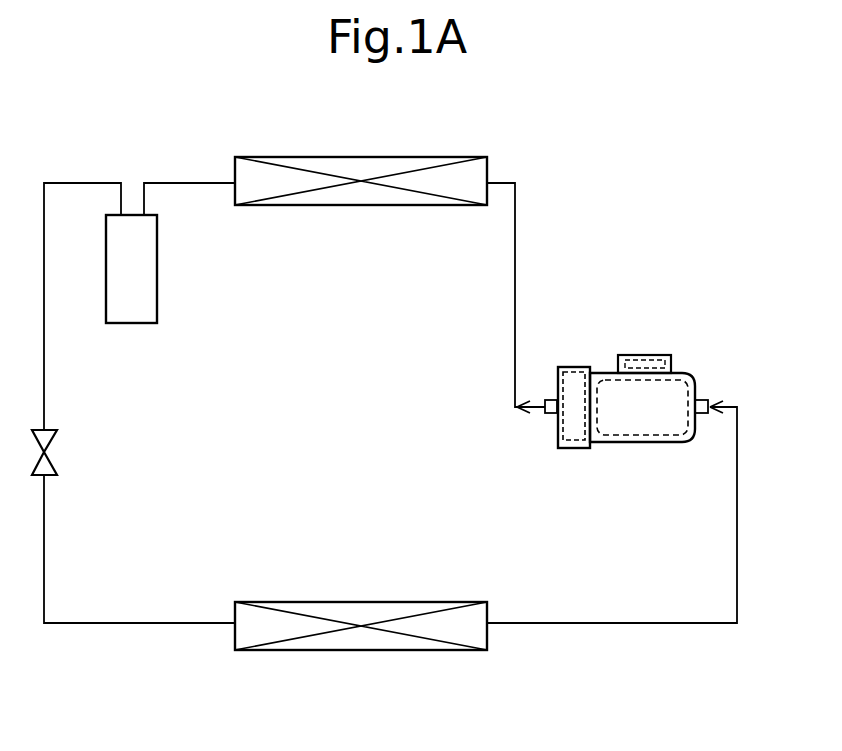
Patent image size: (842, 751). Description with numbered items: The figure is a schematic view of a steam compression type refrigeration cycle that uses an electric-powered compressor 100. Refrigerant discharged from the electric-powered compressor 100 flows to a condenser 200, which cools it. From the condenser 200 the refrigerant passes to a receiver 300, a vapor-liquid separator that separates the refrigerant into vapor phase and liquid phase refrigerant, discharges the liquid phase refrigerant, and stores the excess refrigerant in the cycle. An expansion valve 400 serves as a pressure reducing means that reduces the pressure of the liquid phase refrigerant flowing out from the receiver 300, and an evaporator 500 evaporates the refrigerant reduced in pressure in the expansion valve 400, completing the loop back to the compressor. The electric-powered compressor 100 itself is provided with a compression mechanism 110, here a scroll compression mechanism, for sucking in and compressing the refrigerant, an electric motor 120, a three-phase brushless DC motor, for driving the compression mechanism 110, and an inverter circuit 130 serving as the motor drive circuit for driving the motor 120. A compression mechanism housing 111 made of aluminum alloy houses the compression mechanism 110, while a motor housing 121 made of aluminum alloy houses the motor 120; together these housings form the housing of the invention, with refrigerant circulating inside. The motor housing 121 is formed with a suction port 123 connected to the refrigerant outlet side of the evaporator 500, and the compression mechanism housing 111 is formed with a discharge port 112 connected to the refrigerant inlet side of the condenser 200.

The electric-powered compressor 100 is at (618, 394).
The compression mechanism 110 is at (521, 439).
The compression mechanism housing 111 is at (558, 435).
The discharge port 112 is at (548, 415).
The electric motor 120 is at (669, 414).
The motor housing 121 is at (685, 372).
The suction port 123 is at (700, 400).
The inverter circuit 130 is at (603, 363).
The condenser 200 is at (382, 167).
The receiver 300 is at (146, 267).
The expansion valve 400 is at (53, 442).
The evaporator 500 is at (367, 638).